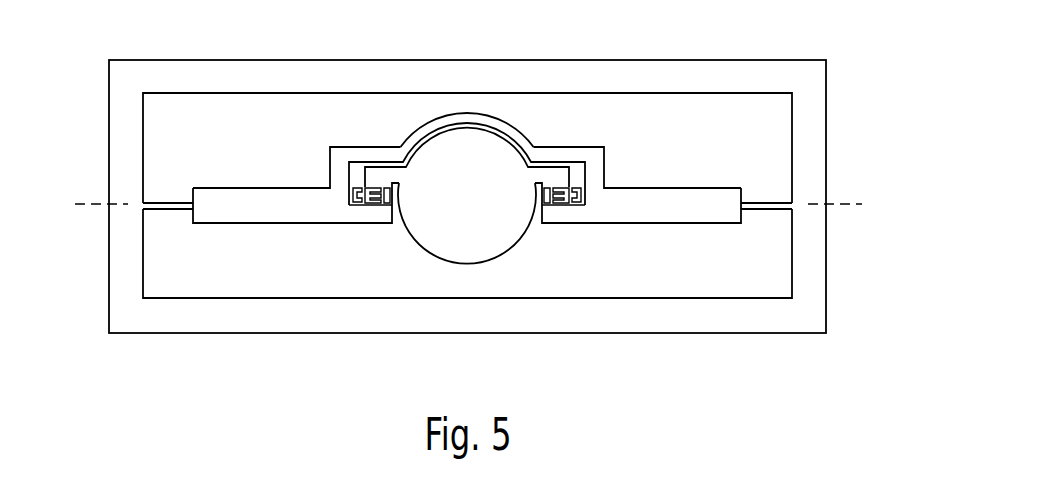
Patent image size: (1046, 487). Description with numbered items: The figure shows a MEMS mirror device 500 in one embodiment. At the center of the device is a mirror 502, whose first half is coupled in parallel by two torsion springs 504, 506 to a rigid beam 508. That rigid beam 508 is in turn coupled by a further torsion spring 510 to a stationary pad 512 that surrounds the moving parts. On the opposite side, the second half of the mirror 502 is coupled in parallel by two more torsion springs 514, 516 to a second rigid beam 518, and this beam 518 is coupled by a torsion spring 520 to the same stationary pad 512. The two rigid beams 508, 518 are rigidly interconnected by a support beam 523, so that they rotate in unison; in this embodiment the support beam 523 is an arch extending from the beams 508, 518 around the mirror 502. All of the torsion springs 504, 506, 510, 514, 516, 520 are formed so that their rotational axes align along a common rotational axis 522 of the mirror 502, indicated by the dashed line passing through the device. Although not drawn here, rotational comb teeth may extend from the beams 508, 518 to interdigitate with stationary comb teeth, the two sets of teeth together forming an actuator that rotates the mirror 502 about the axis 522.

The MEMS mirror device 500 is at (93, 39).
The mirror 502 is at (467, 223).
The torsion spring 504 is at (362, 207).
The torsion spring 506 is at (382, 207).
The rigid beam 508 is at (297, 185).
The torsion spring 510 is at (160, 202).
The stationary pad 512 is at (118, 307).
The torsion spring 514 is at (572, 207).
The torsion spring 516 is at (552, 207).
The rigid beam 518 is at (638, 185).
The torsion spring 520 is at (777, 201).
The rotational axis 522 is at (851, 204).
The support beam 523 is at (470, 113).